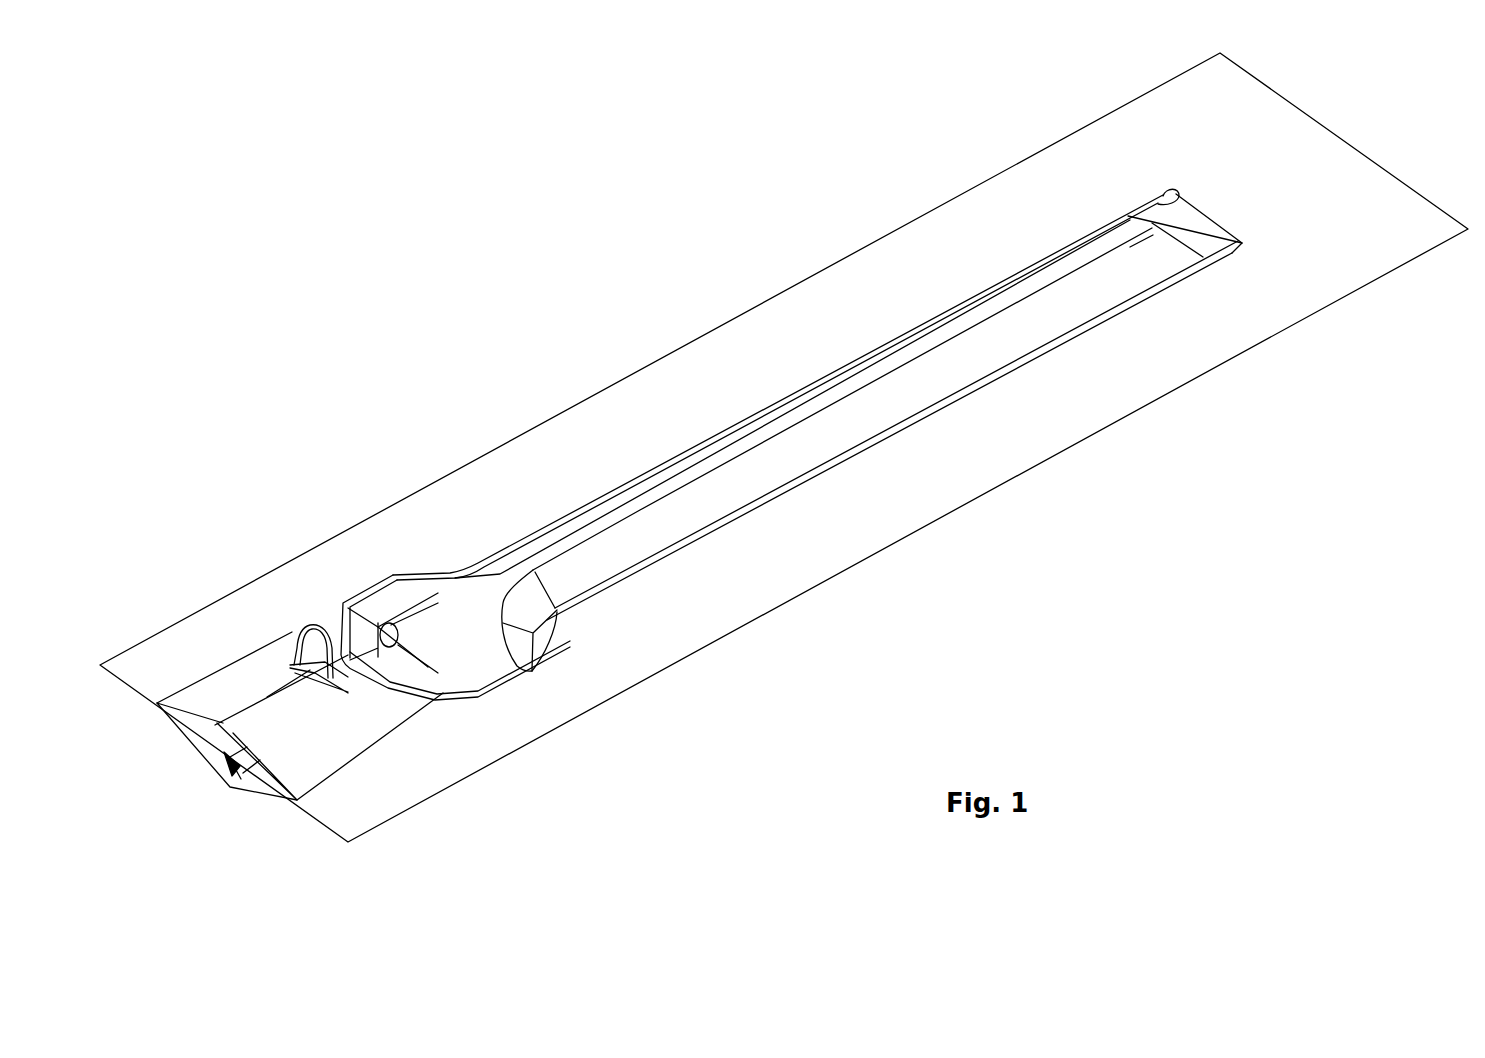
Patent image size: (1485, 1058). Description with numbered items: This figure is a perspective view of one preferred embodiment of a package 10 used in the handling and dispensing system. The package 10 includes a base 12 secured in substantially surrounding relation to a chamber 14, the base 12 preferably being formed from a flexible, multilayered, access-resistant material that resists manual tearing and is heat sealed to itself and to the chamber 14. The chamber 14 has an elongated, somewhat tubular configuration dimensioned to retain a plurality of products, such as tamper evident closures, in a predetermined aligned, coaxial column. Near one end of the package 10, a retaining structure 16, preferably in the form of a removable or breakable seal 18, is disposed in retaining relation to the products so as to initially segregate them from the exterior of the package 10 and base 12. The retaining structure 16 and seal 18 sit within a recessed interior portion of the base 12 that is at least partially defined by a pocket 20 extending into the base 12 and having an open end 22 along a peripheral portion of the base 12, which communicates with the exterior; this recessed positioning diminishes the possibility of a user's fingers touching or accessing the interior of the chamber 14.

The package 10 is at (642, 265).
The base 12 is at (1045, 465).
The chamber 14 is at (972, 292).
The retaining structure 16 is at (327, 570).
The removable seal 18 is at (347, 677).
The pocket 20 is at (307, 757).
The open end 22 is at (178, 737).